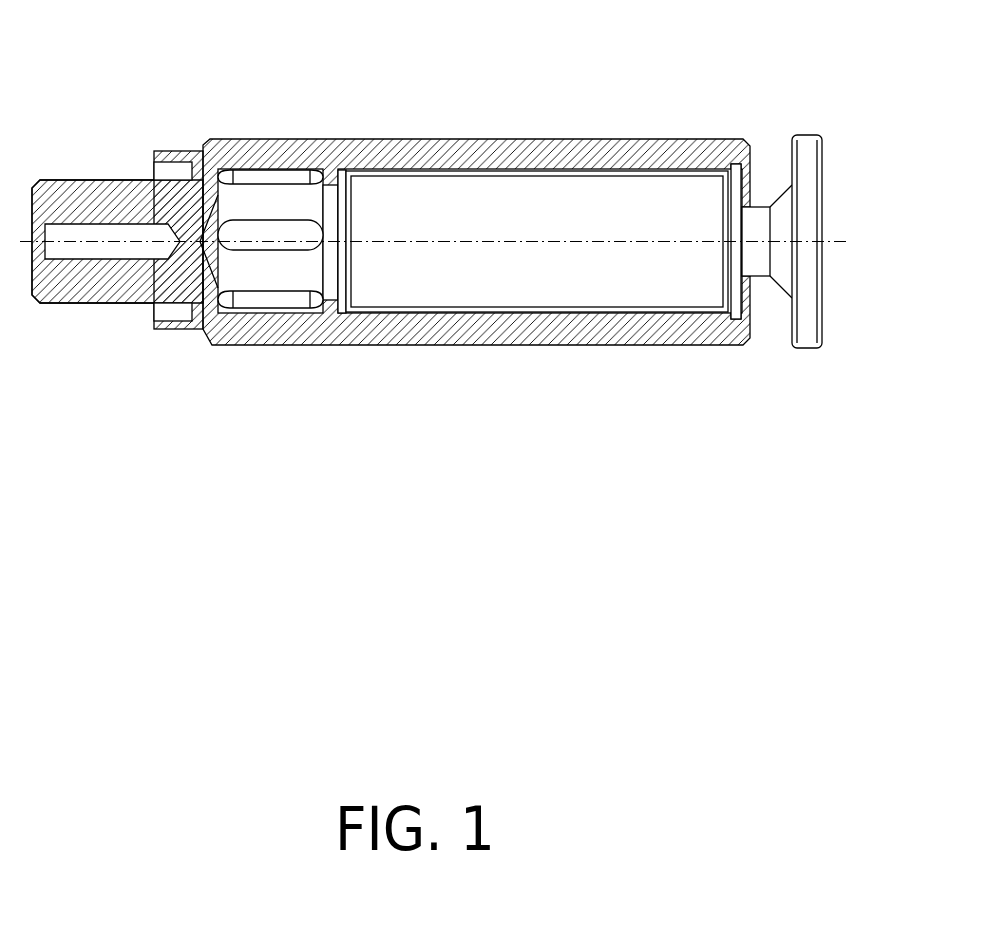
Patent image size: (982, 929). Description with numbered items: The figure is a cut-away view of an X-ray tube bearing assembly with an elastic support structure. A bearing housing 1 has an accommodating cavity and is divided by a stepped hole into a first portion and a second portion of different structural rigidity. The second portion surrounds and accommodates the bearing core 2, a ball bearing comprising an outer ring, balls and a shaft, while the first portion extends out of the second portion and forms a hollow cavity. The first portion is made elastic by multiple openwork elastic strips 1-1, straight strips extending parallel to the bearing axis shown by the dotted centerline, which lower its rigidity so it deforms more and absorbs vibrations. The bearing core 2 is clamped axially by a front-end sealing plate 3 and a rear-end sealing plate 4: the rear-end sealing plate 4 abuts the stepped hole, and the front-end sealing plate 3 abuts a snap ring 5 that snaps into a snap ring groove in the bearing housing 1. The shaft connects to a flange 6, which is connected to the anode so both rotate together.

The bearing housing 1 is at (458, 153).
The elastic strip 1-1 is at (242, 197).
The bearing core 2 is at (593, 198).
The front-end sealing plate 3 is at (730, 195).
The rear-end sealing plate 4 is at (343, 190).
The snap ring 5 is at (738, 177).
The flange 6 is at (807, 162).